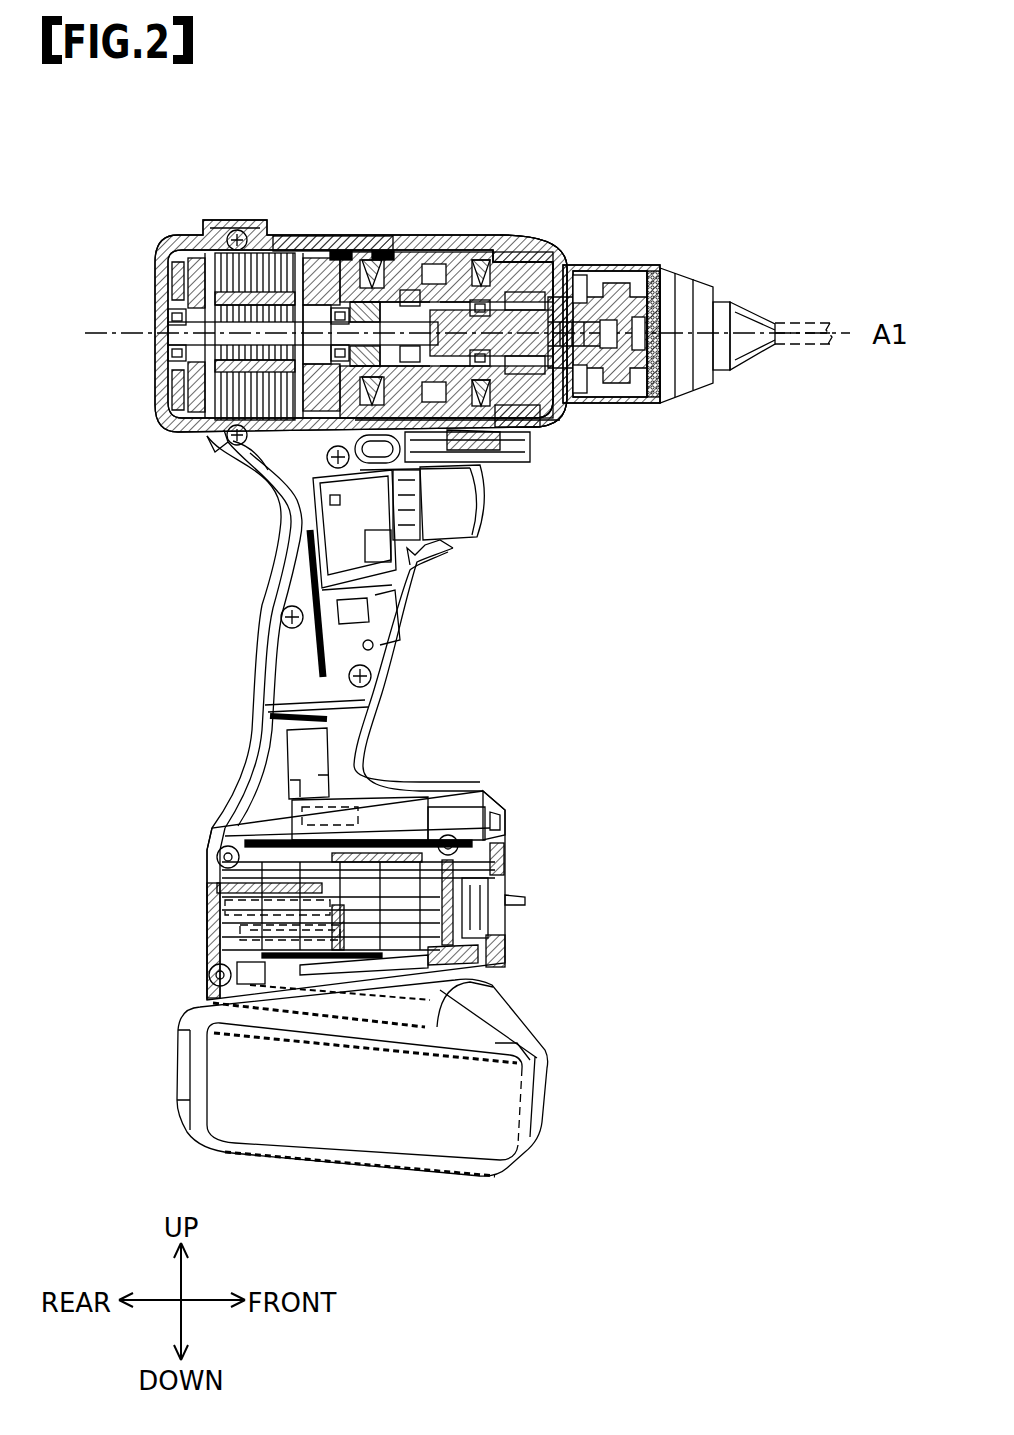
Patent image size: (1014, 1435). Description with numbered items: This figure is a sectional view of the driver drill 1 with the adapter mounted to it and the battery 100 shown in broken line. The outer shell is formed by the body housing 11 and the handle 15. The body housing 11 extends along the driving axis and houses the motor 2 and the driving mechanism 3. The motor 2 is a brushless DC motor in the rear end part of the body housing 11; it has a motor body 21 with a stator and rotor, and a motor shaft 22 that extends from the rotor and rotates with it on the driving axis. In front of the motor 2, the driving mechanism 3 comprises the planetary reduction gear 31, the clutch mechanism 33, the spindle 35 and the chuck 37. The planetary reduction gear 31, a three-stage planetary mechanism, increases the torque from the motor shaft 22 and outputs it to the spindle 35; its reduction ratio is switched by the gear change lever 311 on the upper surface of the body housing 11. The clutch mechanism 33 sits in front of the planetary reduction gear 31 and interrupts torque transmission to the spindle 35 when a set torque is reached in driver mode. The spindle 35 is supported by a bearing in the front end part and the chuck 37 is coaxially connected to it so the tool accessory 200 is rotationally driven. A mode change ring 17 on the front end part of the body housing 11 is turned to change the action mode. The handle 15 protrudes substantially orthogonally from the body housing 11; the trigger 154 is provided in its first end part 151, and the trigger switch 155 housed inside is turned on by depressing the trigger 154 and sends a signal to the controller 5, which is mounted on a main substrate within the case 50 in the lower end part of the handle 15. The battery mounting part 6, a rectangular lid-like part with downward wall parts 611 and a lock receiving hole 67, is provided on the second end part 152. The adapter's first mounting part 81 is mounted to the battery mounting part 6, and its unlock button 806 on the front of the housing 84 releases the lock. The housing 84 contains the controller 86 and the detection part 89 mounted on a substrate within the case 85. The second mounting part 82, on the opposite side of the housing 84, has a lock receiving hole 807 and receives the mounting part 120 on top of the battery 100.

The driver drill 1 is at (716, 102).
The body housing 11 is at (266, 202).
The motor 2 is at (165, 247).
The motor body 21 is at (230, 268).
The motor shaft 22 is at (158, 325).
The gear change lever 311 is at (336, 236).
The planetary reduction gear 31 is at (402, 238).
The driving mechanism 3 is at (470, 252).
The mode change ring 17 is at (510, 240).
The chuck 37 is at (686, 266).
The tool accessory 200 is at (795, 320).
The clutch mechanism 33 is at (520, 428).
The spindle 35 is at (590, 412).
The first end part 151 is at (219, 469).
The trigger 154 is at (460, 507).
The trigger switch 155 is at (400, 560).
The handle 15 is at (216, 633).
The controller 5 is at (372, 790).
The case 50 is at (415, 815).
The second end part 152 is at (214, 812).
The first mounting part 81 is at (510, 826).
The wall parts 611 is at (215, 865).
The battery mounting part 6 is at (511, 857).
The lock receiving hole 67 is at (510, 868).
The controller 86 is at (225, 903).
The detection part 89 is at (242, 930).
The unlock button 806 is at (520, 905).
The housing 84 is at (209, 972).
The case 85 is at (507, 960).
The lock receiving hole 807 is at (505, 993).
The mounting part 120 is at (205, 997).
The second mounting part 82 is at (530, 1060).
The battery 100 is at (558, 1119).